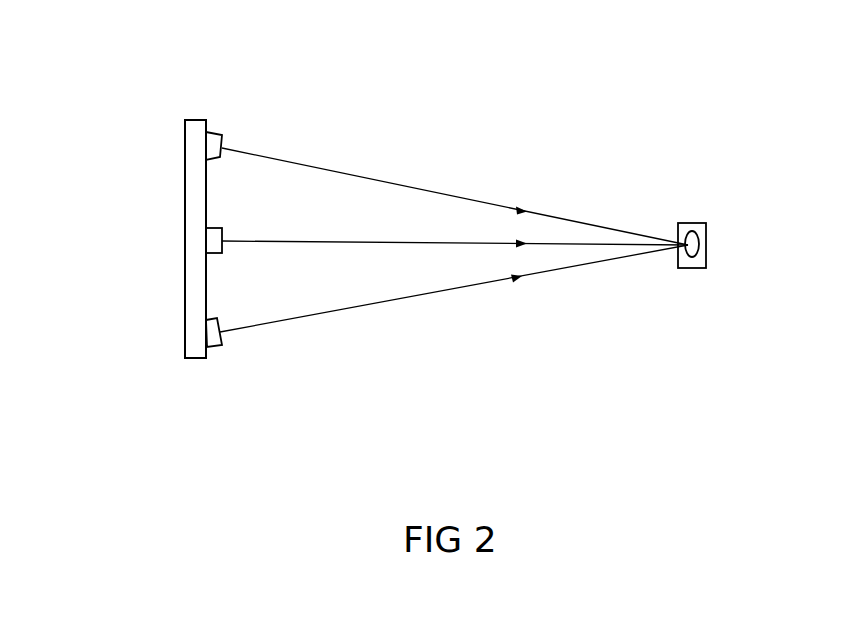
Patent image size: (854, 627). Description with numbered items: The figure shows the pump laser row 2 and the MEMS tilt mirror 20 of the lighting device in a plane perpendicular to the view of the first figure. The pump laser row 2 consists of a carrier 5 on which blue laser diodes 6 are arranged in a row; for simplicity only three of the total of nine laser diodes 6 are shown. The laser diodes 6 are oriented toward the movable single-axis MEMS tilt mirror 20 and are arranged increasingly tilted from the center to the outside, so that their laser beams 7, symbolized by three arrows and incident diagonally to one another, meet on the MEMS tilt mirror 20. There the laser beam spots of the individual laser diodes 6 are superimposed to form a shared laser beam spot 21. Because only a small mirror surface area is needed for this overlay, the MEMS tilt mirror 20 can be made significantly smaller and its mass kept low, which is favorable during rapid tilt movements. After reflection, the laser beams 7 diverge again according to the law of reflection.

The pump laser row 2 is at (191, 385).
The carrier 5 is at (206, 240).
The laser diode 6 is at (213, 133).
The laser beam 7 is at (382, 302).
The MEMS tilt mirror 20 is at (690, 205).
The shared laser beam spot 21 is at (692, 257).